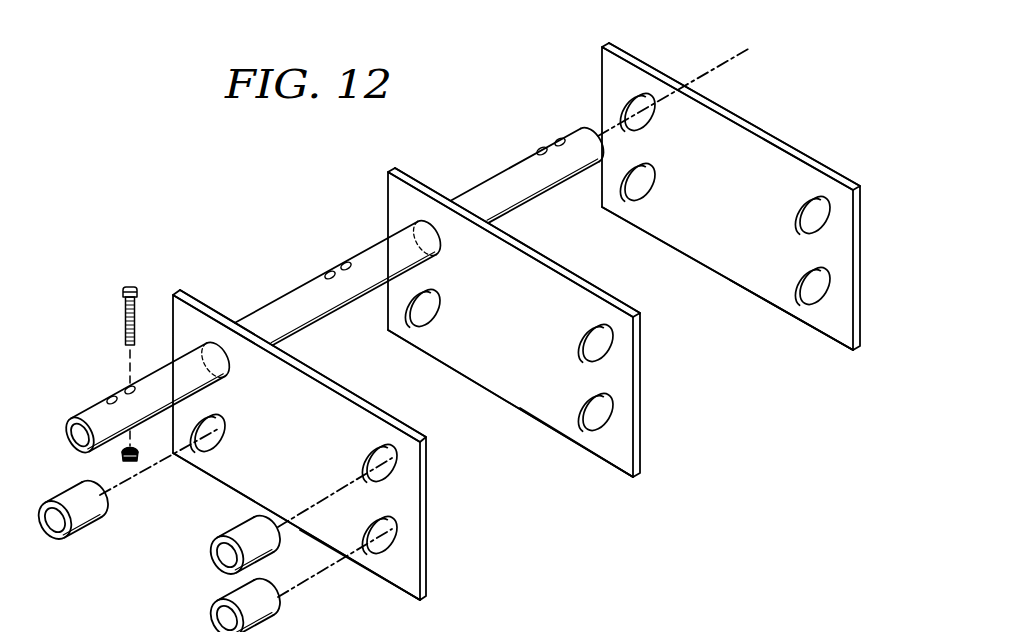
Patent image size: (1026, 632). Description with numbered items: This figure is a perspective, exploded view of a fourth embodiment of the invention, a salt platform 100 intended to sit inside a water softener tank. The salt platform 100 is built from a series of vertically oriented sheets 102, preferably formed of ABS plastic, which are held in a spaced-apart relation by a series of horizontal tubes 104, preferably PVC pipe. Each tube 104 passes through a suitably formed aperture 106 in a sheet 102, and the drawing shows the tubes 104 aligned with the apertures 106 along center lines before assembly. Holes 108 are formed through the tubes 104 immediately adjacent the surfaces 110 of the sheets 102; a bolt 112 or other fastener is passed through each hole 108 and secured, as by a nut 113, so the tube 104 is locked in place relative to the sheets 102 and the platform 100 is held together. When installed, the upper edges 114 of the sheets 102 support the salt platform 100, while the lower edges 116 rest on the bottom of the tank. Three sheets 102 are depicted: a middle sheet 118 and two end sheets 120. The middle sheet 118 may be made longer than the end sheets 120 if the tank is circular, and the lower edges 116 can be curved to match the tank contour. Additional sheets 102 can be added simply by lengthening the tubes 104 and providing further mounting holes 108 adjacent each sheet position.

The salt platform 100 is at (176, 199).
The sheets 102 is at (412, 502).
The tubes 104 is at (80, 520).
The apertures 106 is at (226, 373).
The holes 108 is at (548, 113).
The surfaces 110 is at (280, 476).
The bolt 112 is at (108, 311).
The nut 113 is at (142, 463).
The upper edges 114 is at (190, 300).
The lower edges 116 is at (238, 498).
The middle sheet 118 is at (615, 457).
The end sheets 120 is at (400, 578).